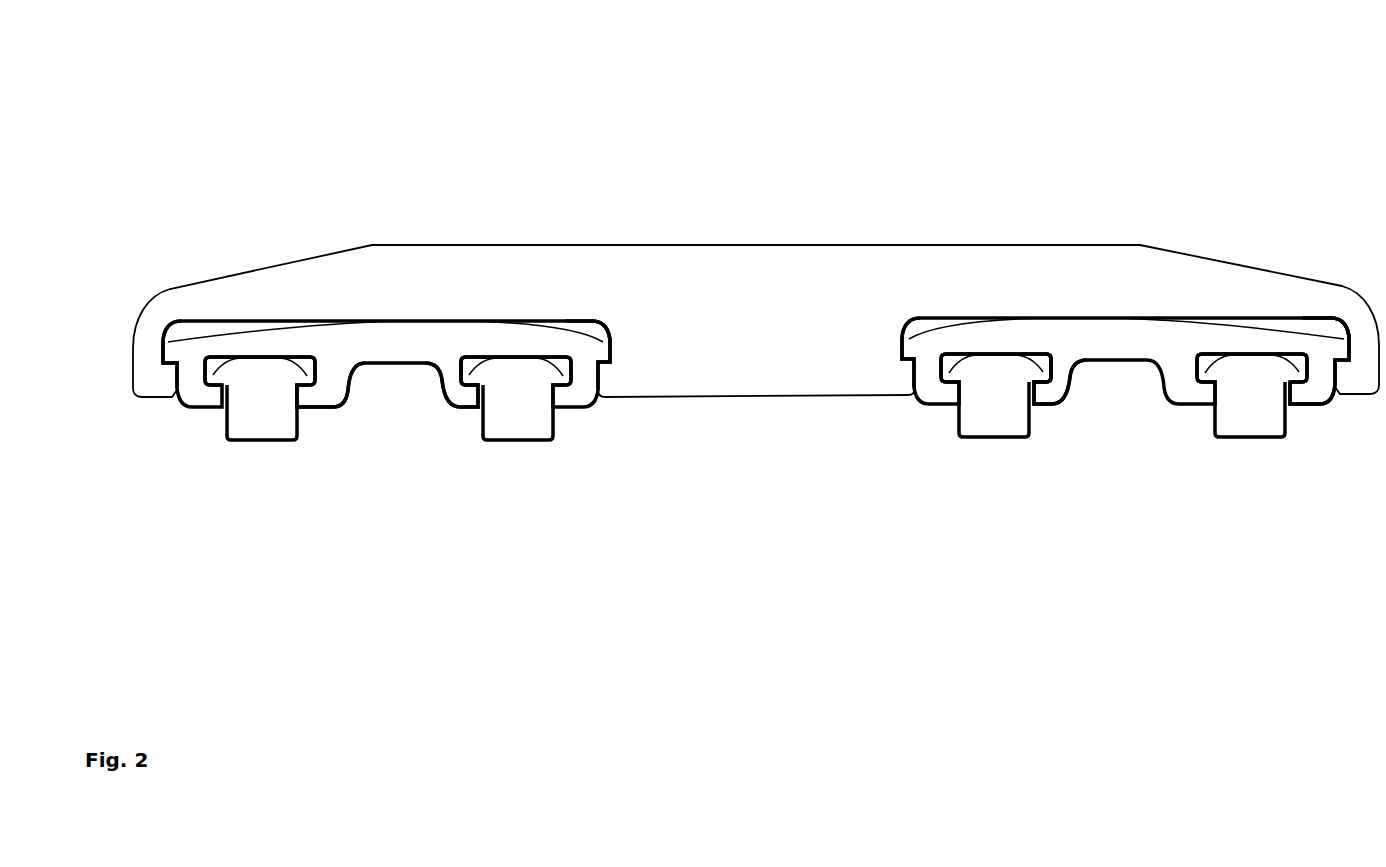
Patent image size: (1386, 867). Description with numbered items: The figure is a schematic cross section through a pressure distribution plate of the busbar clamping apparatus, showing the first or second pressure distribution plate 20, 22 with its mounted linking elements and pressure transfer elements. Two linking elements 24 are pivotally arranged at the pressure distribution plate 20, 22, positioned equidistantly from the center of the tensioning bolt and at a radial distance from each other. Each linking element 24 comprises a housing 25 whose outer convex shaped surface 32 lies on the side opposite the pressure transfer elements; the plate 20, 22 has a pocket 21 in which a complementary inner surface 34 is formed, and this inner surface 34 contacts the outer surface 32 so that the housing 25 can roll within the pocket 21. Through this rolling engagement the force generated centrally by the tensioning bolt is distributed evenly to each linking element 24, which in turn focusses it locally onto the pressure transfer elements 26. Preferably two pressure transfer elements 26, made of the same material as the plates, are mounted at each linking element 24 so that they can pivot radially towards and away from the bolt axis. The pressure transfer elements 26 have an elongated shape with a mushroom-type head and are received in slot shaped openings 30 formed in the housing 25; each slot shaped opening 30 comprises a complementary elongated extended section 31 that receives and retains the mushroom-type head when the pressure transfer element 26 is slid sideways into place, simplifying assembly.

The first pressure distribution plate 20 is at (756, 221).
The second pressure distribution plate 22 is at (743, 292).
The pocket 21 is at (580, 325).
The linking element 24 is at (363, 350).
The housing 25 is at (188, 336).
The pressure transfer element 26 is at (265, 422).
The slot shaped opening 30 is at (300, 415).
The elongated extended section 31 is at (465, 370).
The outer convex shaped surface 32 is at (248, 330).
The complementary inner surface 34 is at (557, 319).